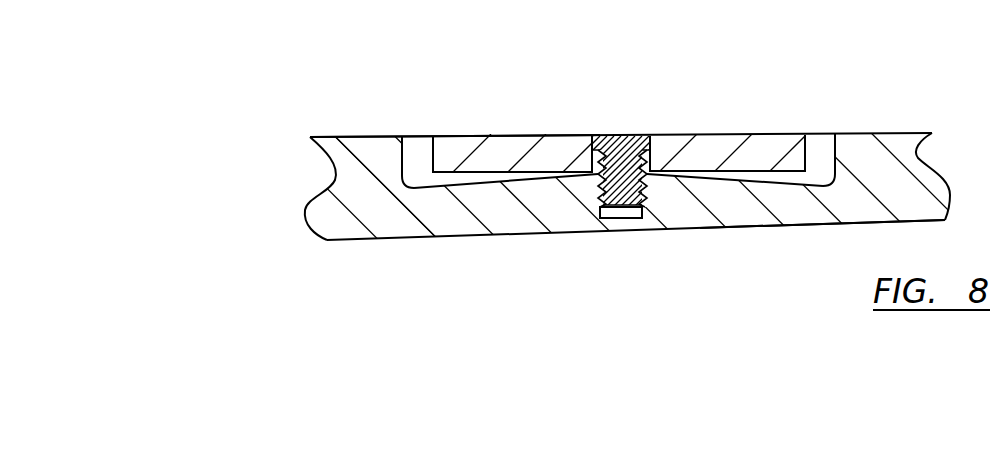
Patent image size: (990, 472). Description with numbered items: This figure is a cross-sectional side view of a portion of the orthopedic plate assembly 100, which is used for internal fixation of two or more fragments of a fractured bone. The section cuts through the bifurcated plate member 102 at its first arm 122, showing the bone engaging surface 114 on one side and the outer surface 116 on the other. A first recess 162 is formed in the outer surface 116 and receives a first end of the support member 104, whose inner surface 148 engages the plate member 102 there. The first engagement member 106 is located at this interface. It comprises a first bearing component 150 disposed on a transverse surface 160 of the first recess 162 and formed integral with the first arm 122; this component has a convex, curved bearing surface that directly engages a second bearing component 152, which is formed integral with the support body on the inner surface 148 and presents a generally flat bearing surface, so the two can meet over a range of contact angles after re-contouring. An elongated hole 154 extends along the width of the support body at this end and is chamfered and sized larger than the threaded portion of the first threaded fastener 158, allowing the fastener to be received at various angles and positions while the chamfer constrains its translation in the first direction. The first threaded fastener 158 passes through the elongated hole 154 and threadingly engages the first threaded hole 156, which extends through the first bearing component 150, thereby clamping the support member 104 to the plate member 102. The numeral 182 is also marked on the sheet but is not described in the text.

The orthopedic plate assembly 100 is at (587, 58).
The bifurcated plate member 102 is at (345, 135).
The support member 104 is at (735, 147).
The first engagement member 106 is at (593, 185).
The bone engaging surface 114 is at (360, 242).
The outer surface 116 is at (383, 135).
The first arm 122 is at (352, 178).
The inner surface 148 is at (813, 224).
The first bearing component 150 is at (504, 183).
The second bearing component 152 is at (503, 183).
The elongated hole 154 is at (618, 138).
The first threaded hole 156 is at (624, 184).
The first threaded fastener 158 is at (648, 175).
The transverse surface 160 is at (474, 183).
The first recess 162 is at (835, 153).
The reference element 182 is at (954, 11).